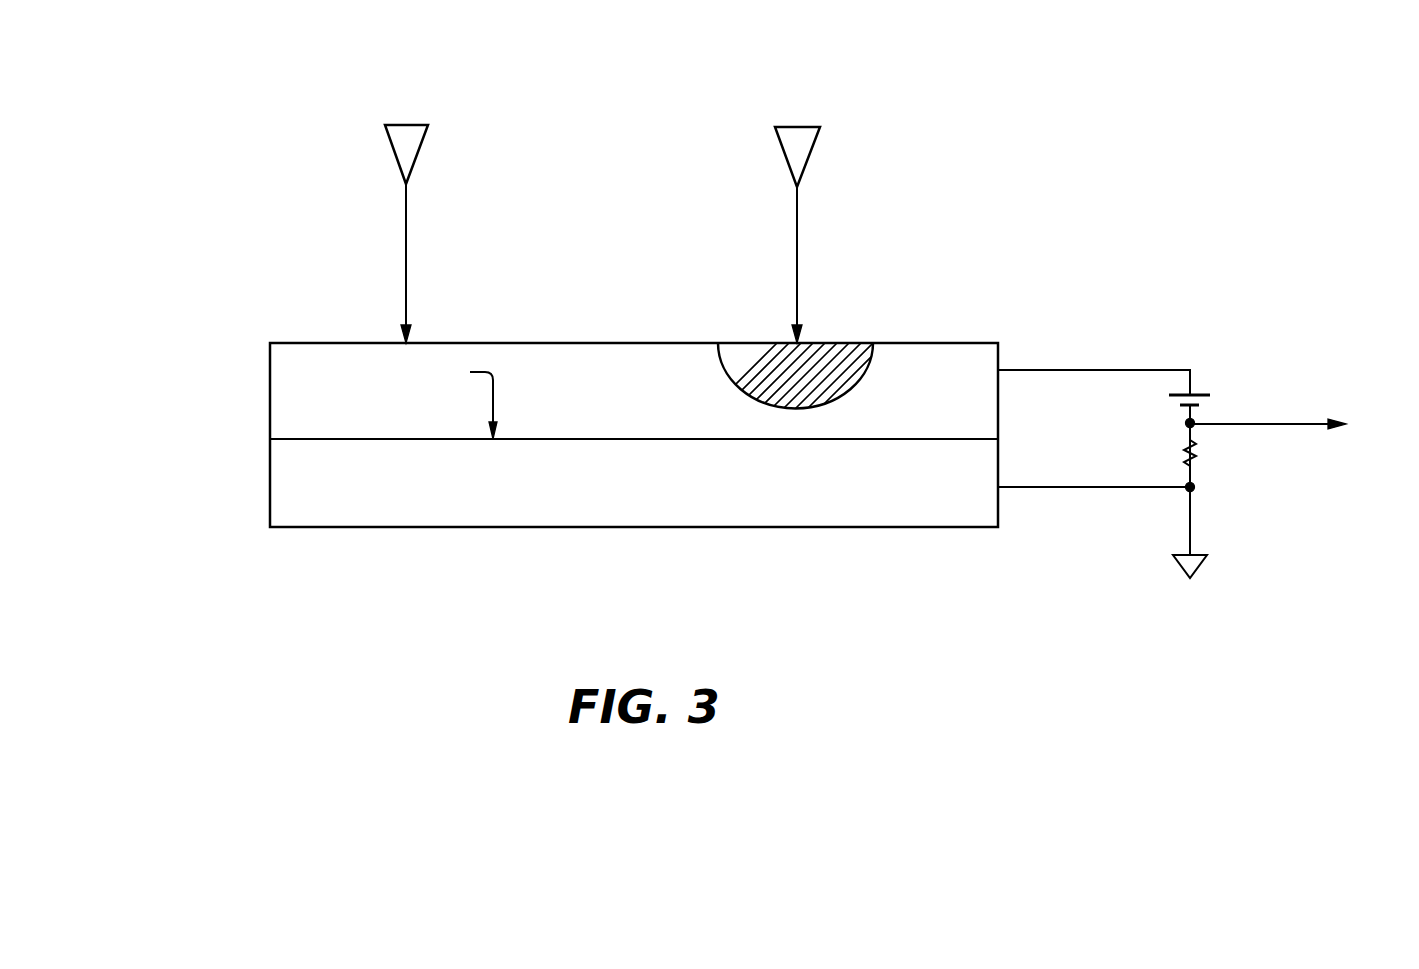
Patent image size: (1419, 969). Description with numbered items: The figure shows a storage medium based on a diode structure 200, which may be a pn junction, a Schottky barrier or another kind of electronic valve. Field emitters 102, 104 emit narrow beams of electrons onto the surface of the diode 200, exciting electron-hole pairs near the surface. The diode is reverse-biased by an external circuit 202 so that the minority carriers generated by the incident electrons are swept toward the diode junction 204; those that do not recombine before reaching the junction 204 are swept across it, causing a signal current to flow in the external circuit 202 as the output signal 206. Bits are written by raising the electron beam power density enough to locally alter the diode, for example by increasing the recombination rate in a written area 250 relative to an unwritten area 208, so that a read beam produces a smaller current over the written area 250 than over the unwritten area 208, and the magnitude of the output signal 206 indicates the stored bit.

The field emitter 102 is at (413, 135).
The field emitter 104 is at (797, 143).
The diode structure 200 is at (207, 405).
The external circuit 202 is at (1203, 385).
The diode junction 204 is at (343, 440).
The output signal 206 is at (1303, 426).
The unwritten area 208 is at (442, 327).
The written area 250 is at (828, 327).